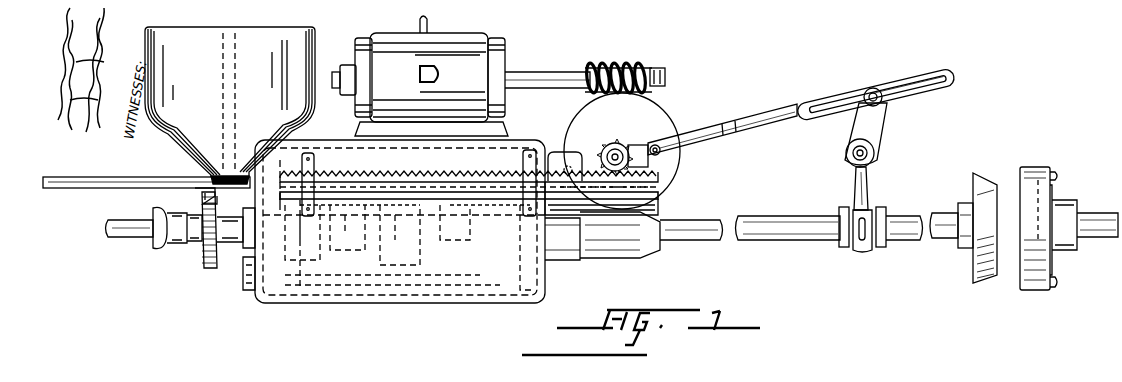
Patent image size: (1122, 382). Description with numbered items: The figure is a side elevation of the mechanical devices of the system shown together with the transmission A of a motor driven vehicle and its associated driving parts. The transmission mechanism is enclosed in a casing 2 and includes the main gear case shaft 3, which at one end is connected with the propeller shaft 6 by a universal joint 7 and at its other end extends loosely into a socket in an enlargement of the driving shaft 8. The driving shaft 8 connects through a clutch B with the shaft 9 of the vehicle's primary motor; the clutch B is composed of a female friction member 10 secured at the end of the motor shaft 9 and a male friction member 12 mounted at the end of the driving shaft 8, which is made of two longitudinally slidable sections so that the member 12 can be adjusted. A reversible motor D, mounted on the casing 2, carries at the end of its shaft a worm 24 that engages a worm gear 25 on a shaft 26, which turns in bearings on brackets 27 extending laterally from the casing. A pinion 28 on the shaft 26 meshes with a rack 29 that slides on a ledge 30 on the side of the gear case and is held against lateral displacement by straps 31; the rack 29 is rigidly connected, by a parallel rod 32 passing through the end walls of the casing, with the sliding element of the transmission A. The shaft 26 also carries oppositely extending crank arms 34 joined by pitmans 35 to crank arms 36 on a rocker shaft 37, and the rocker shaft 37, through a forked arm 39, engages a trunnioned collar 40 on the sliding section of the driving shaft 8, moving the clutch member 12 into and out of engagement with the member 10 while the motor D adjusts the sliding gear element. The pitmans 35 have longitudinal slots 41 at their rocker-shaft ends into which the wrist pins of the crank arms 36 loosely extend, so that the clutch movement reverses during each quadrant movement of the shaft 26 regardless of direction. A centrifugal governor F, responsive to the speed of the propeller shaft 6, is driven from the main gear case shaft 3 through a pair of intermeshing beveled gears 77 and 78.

The casing 2 is at (392, 274).
The main gear case shaft 3 is at (236, 249).
The propeller shaft 6 is at (120, 238).
The universal joint 7 is at (180, 247).
The driving shaft 8 is at (712, 241).
The motor shaft 9 is at (1096, 238).
The female friction member 10 is at (1037, 290).
The male friction member 12 is at (990, 279).
The worm 24 is at (608, 62).
The worm gear 25 is at (705, 113).
The shaft 26 is at (662, 147).
The brackets 27 is at (549, 150).
The pinion 28 is at (621, 144).
The rack 29 is at (407, 176).
The ledge 30 is at (432, 208).
The straps 31 is at (318, 167).
The rod 32 is at (131, 177).
The crank arms 34 is at (660, 165).
The pitmans 35 is at (762, 110).
The crank arms 36 is at (873, 122).
The rocker shaft 37 is at (875, 151).
The forked arm 39 is at (867, 190).
The trunnioned collar 40 is at (842, 245).
The longitudinal slots 41 is at (913, 83).
The beveled gear 77 is at (203, 202).
The beveled gear 78 is at (207, 268).
The transmission A is at (400, 237).
The clutch B is at (1017, 135).
The reversible motor D is at (461, 76).
The centrifugal governor F is at (230, 105).